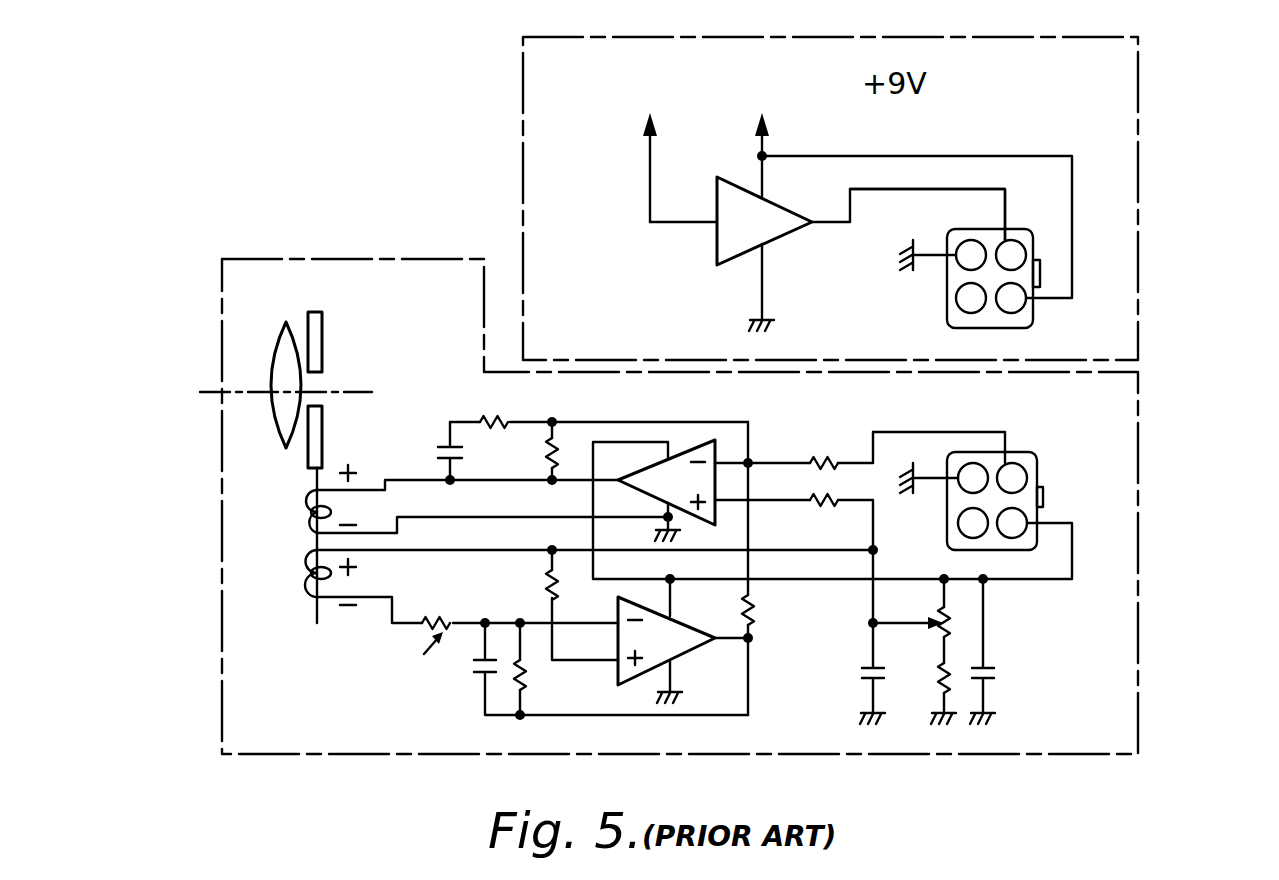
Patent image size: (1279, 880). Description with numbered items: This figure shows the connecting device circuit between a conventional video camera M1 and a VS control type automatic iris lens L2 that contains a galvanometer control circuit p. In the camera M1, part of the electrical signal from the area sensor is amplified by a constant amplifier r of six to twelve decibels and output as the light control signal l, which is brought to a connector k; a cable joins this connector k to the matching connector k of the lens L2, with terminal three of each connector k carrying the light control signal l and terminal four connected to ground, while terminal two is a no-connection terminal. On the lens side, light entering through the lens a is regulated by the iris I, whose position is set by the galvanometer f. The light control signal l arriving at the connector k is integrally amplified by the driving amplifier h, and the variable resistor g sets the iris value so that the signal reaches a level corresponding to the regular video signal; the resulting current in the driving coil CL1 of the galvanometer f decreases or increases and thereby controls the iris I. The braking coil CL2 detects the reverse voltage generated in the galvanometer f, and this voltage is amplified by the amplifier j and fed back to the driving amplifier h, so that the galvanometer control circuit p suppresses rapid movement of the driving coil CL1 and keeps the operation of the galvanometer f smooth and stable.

The lens a is at (283, 325).
The iris I is at (322, 322).
The driving coil CL1 is at (308, 505).
The braking coil CL2 is at (308, 565).
The galvanometer f is at (424, 654).
The variable resistor g is at (931, 640).
The driving amplifier h is at (696, 447).
The amplifier j is at (680, 648).
The galvanometer control circuit p is at (640, 720).
The connector k is at (947, 303).
The light control signal l is at (890, 192).
The constant amplifier r is at (727, 228).
The video camera M1 is at (1140, 193).
The VS control type automatic iris lens L2 is at (1142, 447).